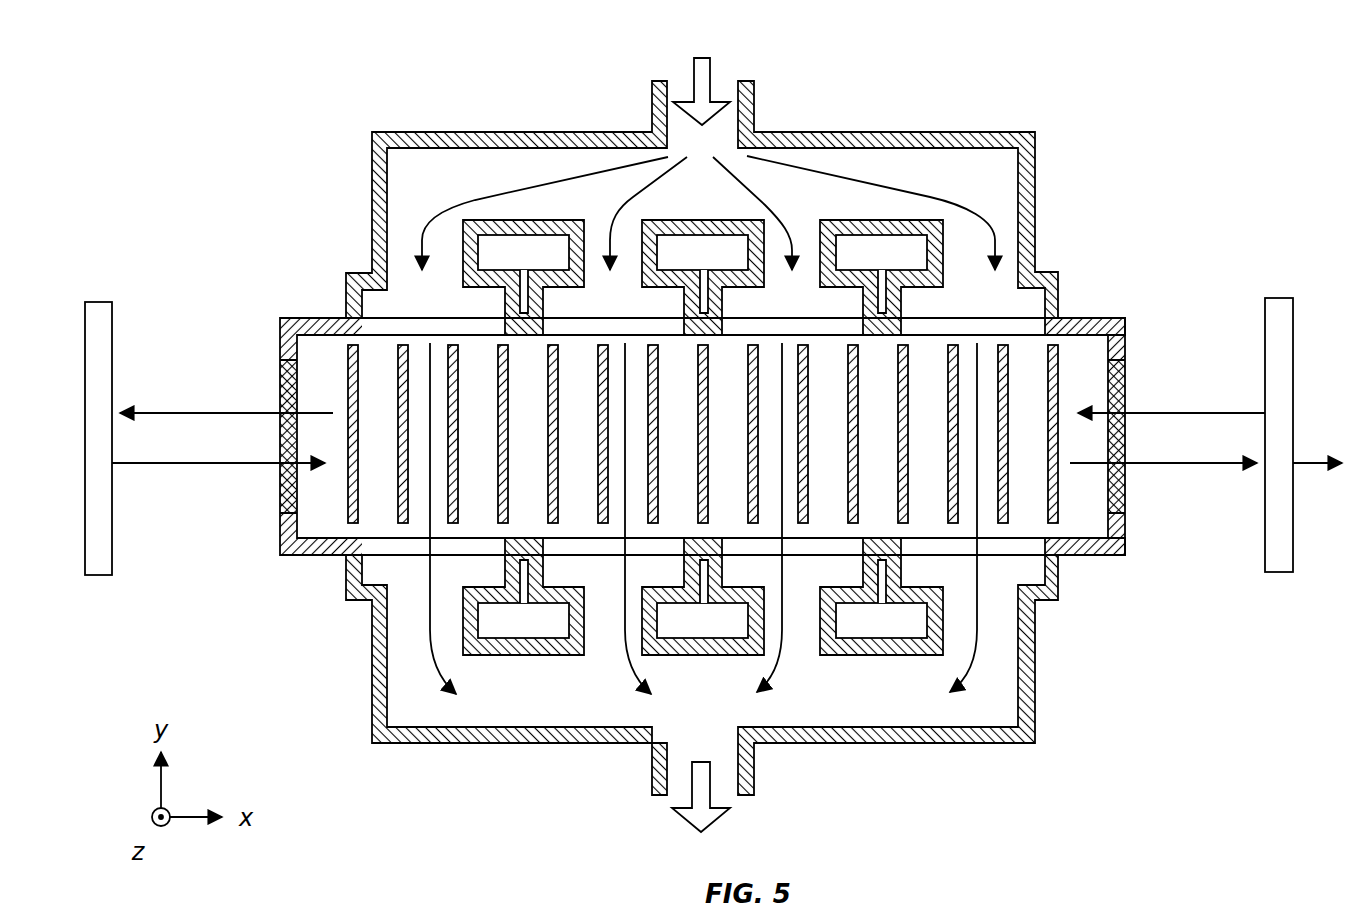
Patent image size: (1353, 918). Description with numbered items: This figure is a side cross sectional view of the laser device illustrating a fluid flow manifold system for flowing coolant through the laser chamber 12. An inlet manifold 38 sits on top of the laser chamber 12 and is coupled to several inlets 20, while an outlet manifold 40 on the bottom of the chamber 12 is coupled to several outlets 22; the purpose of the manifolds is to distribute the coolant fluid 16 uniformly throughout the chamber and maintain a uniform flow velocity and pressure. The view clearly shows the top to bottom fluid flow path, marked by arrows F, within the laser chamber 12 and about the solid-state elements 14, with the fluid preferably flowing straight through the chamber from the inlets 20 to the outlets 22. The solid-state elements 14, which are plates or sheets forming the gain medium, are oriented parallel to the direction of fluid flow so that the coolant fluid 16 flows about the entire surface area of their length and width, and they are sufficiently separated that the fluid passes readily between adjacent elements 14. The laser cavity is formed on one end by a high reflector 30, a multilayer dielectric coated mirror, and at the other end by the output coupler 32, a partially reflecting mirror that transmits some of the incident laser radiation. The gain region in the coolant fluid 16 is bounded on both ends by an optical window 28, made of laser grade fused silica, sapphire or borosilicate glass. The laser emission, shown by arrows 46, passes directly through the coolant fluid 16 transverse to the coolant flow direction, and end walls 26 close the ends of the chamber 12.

The laser chamber 12 is at (337, 313).
The solid-state elements 14 is at (348, 493).
The coolant fluid 16 is at (690, 203).
The inlets 20 is at (441, 320).
The outlets 22 is at (375, 547).
The end walls 26 is at (1104, 318).
The optical window 28 is at (283, 392).
The high reflector 30 is at (106, 327).
The output coupler 32 is at (1278, 298).
The inlet manifold 38 is at (972, 128).
The outlet manifold 40 is at (927, 745).
The laser emission 46 is at (230, 467).